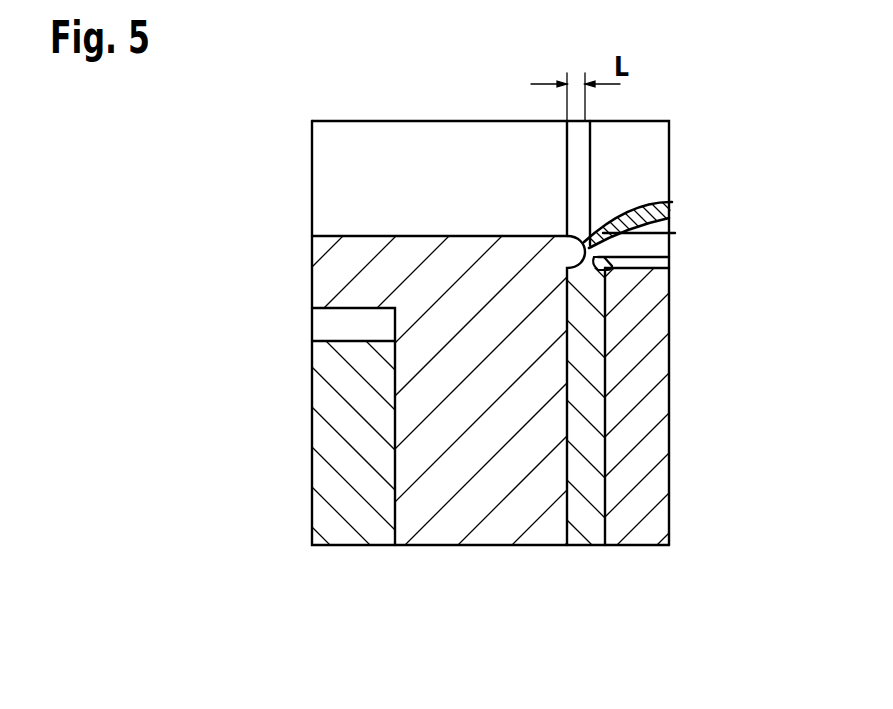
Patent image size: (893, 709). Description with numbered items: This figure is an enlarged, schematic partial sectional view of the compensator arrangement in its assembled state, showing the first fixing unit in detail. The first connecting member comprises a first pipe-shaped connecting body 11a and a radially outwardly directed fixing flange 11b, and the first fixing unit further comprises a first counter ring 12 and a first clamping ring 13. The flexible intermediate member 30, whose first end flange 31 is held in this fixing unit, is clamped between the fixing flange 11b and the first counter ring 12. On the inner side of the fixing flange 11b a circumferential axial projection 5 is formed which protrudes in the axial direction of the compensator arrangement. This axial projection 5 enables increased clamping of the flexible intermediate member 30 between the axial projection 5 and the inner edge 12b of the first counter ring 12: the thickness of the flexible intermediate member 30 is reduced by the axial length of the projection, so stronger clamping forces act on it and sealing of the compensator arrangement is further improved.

The circumferential axial projection 5 is at (649, 233).
The first pipe-shaped connecting body 11a is at (336, 274).
The fixing flange 11b is at (502, 522).
The first counter ring 12 is at (646, 380).
The inner edge 12b is at (600, 262).
The first clamping ring 13 is at (363, 522).
The flexible intermediate member 30 is at (647, 213).
The first end flange 31 is at (588, 436).